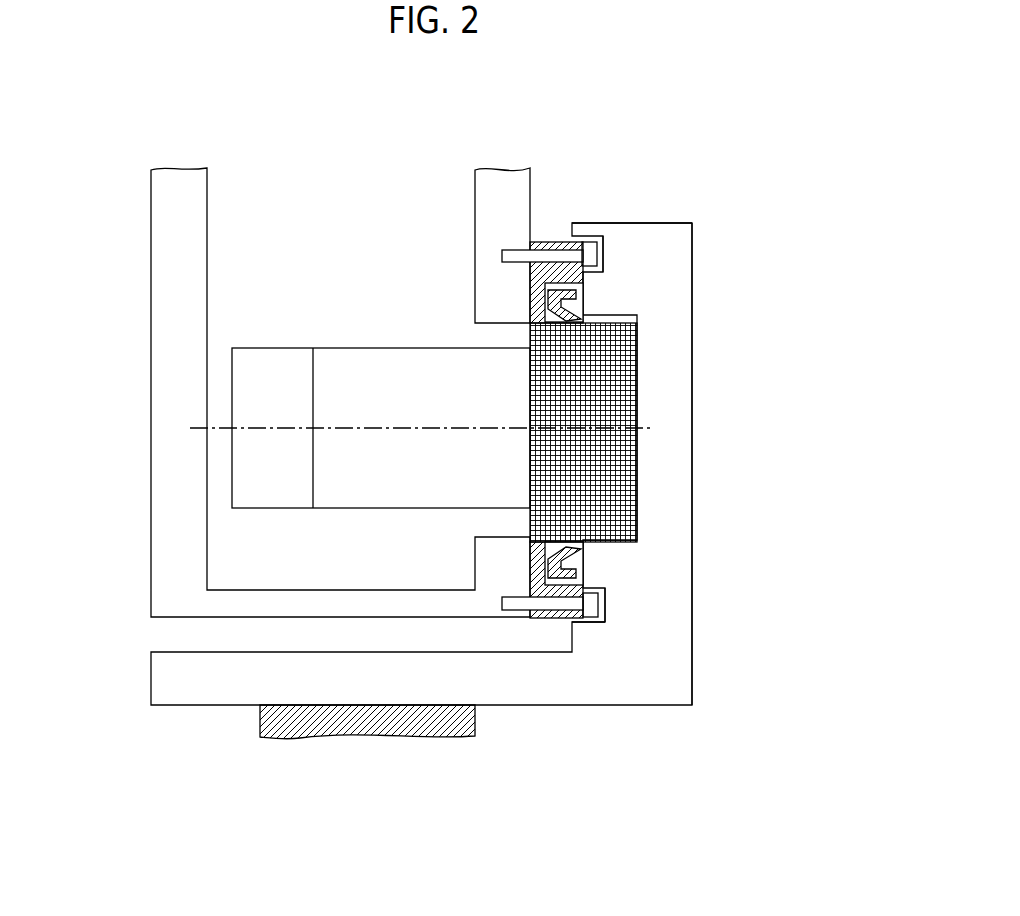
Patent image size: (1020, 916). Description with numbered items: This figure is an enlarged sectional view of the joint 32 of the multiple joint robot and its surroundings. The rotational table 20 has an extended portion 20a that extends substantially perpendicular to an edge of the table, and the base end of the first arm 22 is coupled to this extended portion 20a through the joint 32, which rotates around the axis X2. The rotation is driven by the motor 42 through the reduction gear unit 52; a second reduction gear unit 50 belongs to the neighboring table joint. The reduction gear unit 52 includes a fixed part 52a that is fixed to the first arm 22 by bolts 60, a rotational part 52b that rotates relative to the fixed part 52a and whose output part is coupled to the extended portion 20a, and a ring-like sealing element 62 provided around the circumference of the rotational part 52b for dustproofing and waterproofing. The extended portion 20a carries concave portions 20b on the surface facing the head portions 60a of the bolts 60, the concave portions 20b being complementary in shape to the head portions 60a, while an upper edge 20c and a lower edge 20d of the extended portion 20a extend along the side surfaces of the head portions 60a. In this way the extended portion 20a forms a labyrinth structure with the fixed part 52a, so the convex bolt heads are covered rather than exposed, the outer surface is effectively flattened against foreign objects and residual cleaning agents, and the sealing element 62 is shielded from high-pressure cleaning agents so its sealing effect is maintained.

The rotational table 20 is at (180, 707).
The extended portion 20a is at (692, 545).
The concave portions 20b is at (605, 252).
The upper edge 20c is at (583, 233).
The lower edge 20d is at (585, 637).
The first arm 22 is at (475, 230).
The joint 32 is at (706, 466).
The motor 42 is at (353, 348).
The reduction gear unit 50 is at (475, 722).
The reduction gear unit 52 is at (780, 265).
The fixed part 52a is at (566, 293).
The rotational part 52b is at (637, 405).
The bolts 60 is at (558, 253).
The head portions 60a is at (590, 240).
The sealing element 62 is at (590, 558).
The axis X2 is at (217, 428).